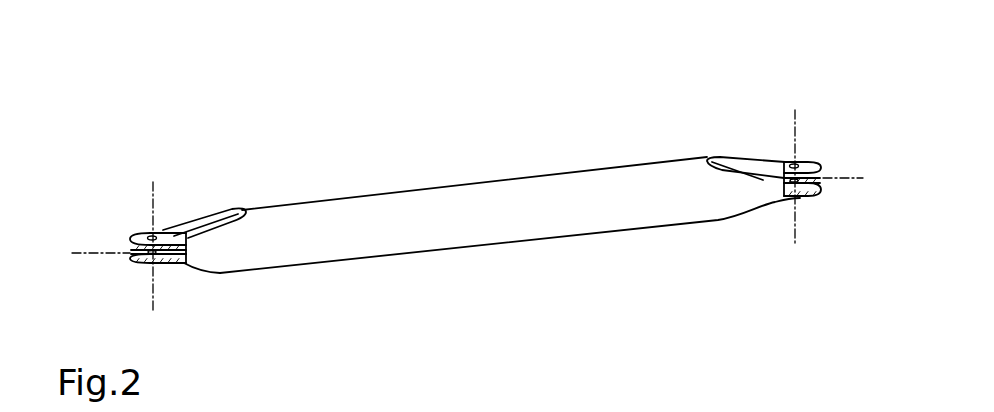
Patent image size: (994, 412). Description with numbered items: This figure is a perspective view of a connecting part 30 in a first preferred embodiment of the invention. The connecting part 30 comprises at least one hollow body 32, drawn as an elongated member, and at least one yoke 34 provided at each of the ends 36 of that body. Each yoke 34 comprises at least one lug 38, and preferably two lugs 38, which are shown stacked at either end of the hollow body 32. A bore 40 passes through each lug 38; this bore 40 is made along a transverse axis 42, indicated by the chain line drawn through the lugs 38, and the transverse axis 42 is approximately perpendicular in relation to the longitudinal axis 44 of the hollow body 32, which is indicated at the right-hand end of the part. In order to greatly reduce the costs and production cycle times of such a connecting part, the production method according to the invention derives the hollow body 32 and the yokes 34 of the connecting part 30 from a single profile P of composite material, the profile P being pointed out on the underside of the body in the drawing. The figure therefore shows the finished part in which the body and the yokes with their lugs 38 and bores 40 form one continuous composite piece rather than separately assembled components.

The connecting part 30 is at (450, 125).
The hollow body 32 is at (570, 187).
The yoke 34 is at (196, 218).
The end 36 is at (211, 288).
The lug 38 is at (130, 238).
The bore 40 is at (153, 235).
The transverse axis 42 is at (158, 297).
The longitudinal axis 44 is at (848, 178).
The profile P is at (466, 251).